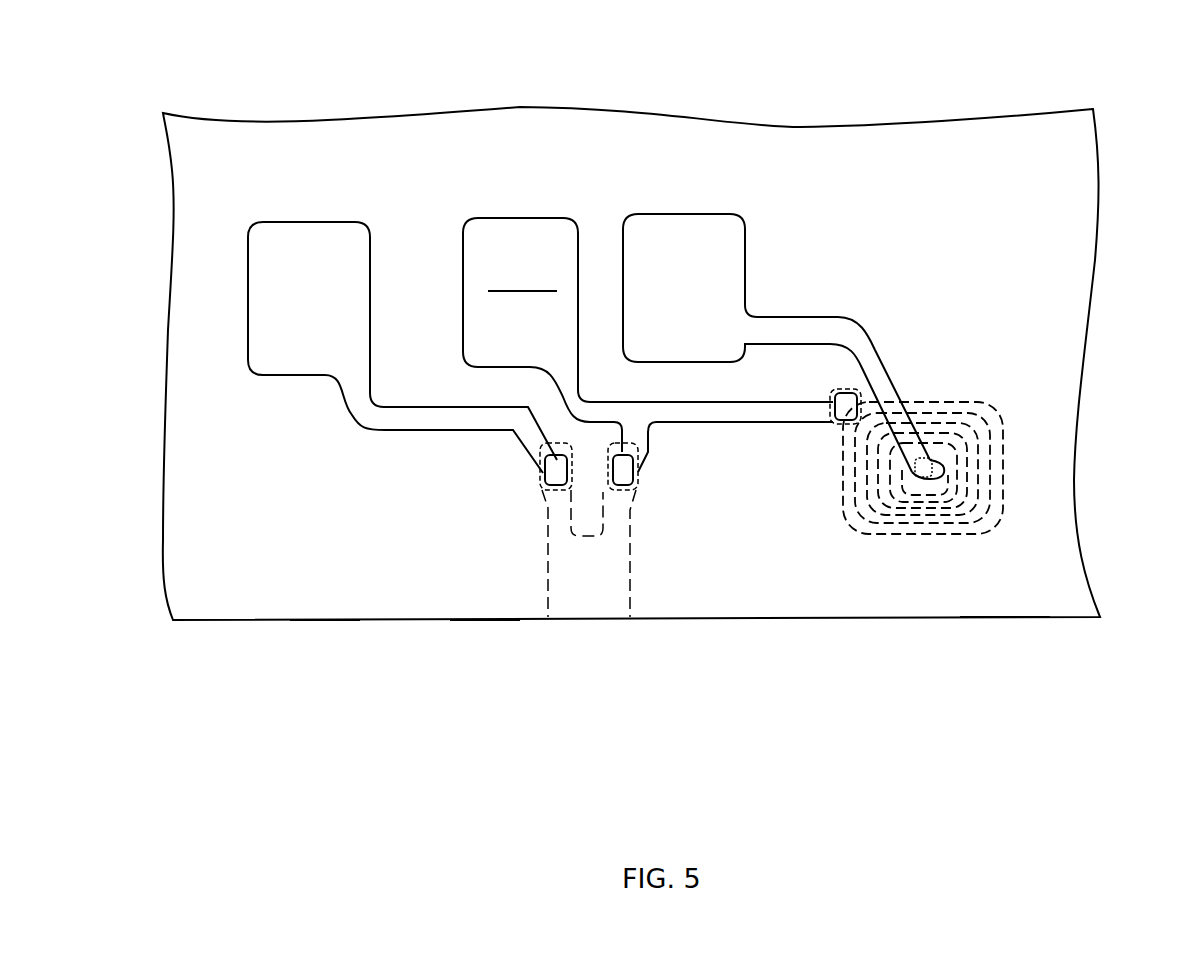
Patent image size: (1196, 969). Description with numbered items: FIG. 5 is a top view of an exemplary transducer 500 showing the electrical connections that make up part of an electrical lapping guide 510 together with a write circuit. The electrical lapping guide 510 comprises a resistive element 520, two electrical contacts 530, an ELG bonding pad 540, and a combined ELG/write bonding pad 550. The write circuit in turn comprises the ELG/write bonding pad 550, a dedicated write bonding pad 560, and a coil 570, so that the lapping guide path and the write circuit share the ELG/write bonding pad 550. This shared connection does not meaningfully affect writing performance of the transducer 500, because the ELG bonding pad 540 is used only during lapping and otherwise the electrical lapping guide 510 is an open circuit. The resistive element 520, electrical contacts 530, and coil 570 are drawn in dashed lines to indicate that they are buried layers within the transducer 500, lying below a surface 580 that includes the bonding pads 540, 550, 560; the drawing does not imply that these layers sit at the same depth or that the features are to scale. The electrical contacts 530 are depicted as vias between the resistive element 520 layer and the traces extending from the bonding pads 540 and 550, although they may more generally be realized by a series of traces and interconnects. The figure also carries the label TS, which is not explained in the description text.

The transducer 500 is at (907, 122).
The electrical lapping guide 510 is at (488, 585).
The resistive element 520 is at (595, 610).
The electrical contacts 530 is at (625, 490).
The ELG bonding pad 540 is at (297, 222).
The combined ELG/write bonding pad 550 is at (515, 218).
The dedicated write bonding pad 560 is at (678, 214).
The coil 570 is at (987, 433).
The surface 580 is at (1002, 587).
The trailing surface TS is at (323, 623).